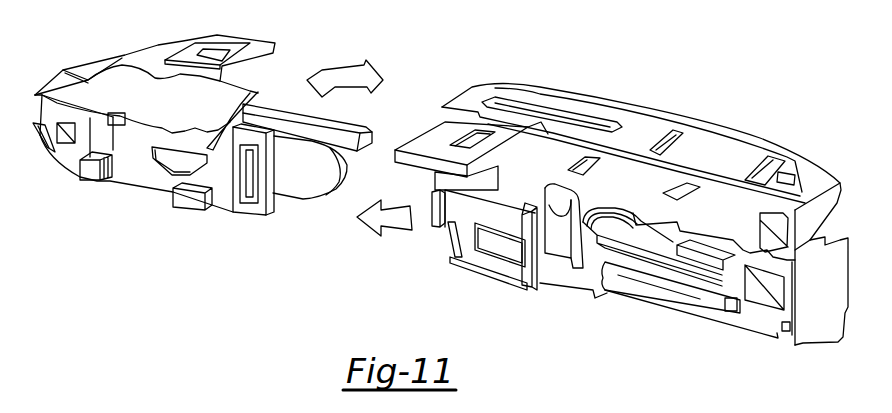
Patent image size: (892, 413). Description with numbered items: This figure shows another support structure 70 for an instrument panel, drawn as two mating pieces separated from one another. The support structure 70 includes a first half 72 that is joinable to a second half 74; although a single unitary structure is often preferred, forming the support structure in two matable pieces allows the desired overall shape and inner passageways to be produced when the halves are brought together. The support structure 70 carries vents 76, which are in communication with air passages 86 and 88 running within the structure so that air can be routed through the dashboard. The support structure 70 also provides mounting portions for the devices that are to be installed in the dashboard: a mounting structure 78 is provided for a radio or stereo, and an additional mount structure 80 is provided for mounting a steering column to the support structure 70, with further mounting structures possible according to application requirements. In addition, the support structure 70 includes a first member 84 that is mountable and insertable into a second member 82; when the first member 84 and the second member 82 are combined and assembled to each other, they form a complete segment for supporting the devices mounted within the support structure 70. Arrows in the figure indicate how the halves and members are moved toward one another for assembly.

The support structure 70 is at (646, 97).
The first half 72 is at (128, 82).
The second half 74 is at (718, 197).
The vents 76 is at (250, 185).
The mounting structure 78 is at (490, 243).
The mount structure 80 is at (127, 193).
The second member 82 is at (413, 142).
The first member 84 is at (300, 115).
The air passage 86 is at (307, 183).
The air passage 88 is at (432, 208).